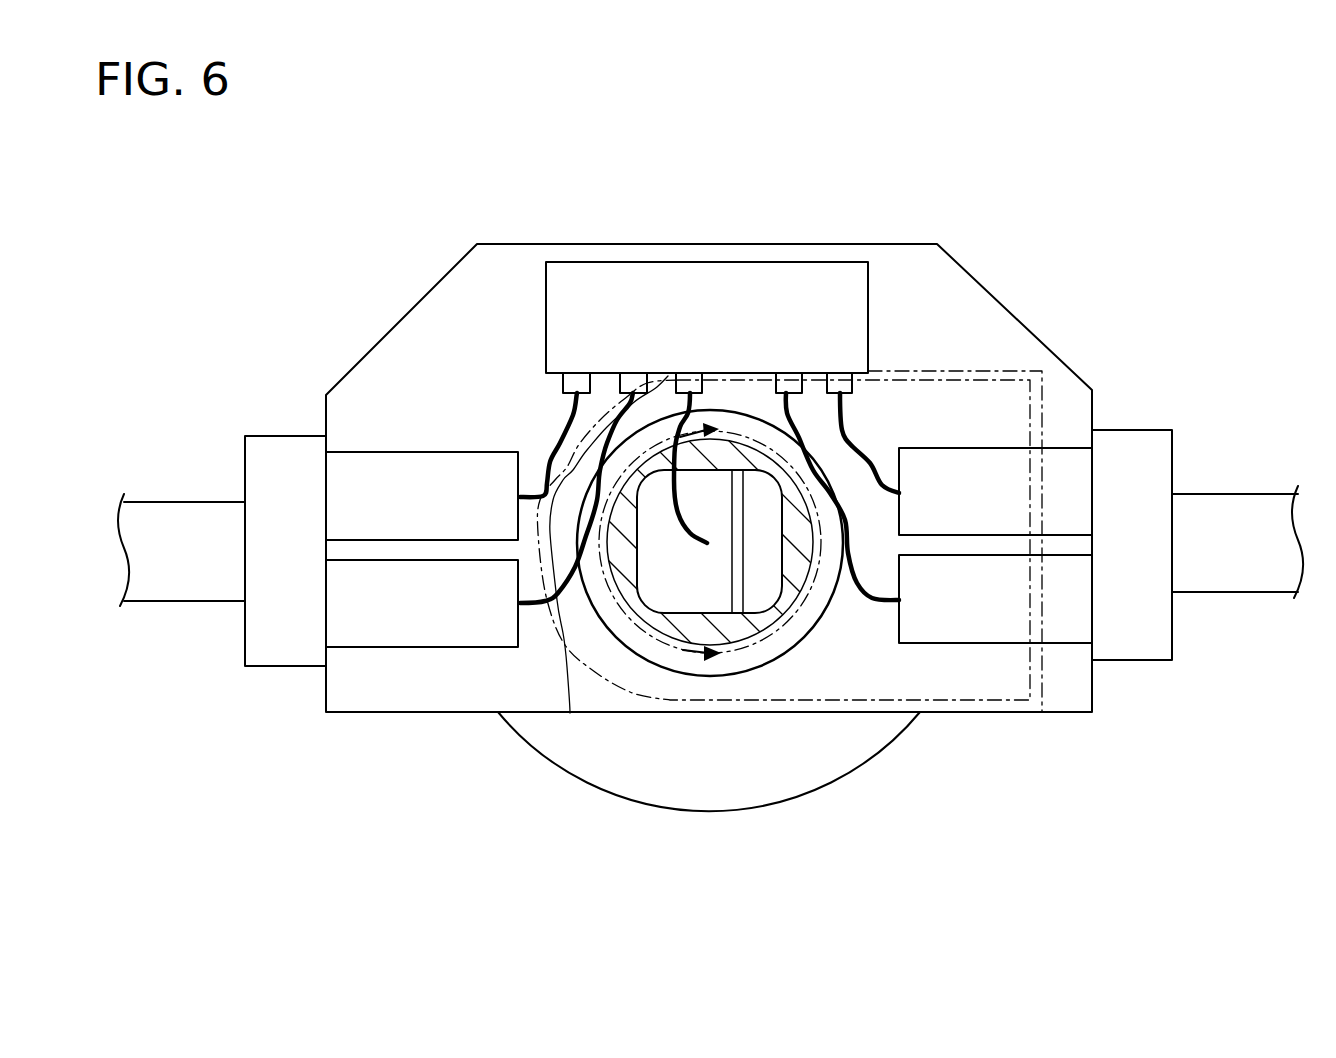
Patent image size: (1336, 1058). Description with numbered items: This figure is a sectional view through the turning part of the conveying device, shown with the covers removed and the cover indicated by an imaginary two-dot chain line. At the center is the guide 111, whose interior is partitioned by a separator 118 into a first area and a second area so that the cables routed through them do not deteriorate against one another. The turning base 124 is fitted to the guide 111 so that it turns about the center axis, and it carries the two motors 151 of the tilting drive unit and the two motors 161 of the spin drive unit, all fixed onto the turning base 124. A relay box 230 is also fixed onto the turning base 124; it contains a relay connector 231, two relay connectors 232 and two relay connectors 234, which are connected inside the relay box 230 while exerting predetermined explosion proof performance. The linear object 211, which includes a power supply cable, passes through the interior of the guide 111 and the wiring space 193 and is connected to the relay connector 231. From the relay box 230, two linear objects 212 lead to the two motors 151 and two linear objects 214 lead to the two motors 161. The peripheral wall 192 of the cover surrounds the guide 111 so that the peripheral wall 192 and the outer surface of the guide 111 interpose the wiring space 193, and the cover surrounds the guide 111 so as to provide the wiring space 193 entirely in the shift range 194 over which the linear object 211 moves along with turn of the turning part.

The guide 111 is at (787, 590).
The separator 118 is at (737, 563).
The turning base 124 is at (487, 292).
The motor 151 is at (377, 625).
The motor 161 is at (369, 473).
The peripheral wall 192 is at (647, 700).
The wiring space 193 is at (645, 700).
The shift range 194 is at (570, 713).
The linear object 211 is at (668, 456).
The linear object 212 is at (543, 607).
The linear object 214 is at (548, 420).
The relay box 230 is at (805, 297).
The relay connector 231 is at (692, 388).
The relay connector 232 is at (634, 388).
The relay connector 234 is at (578, 388).